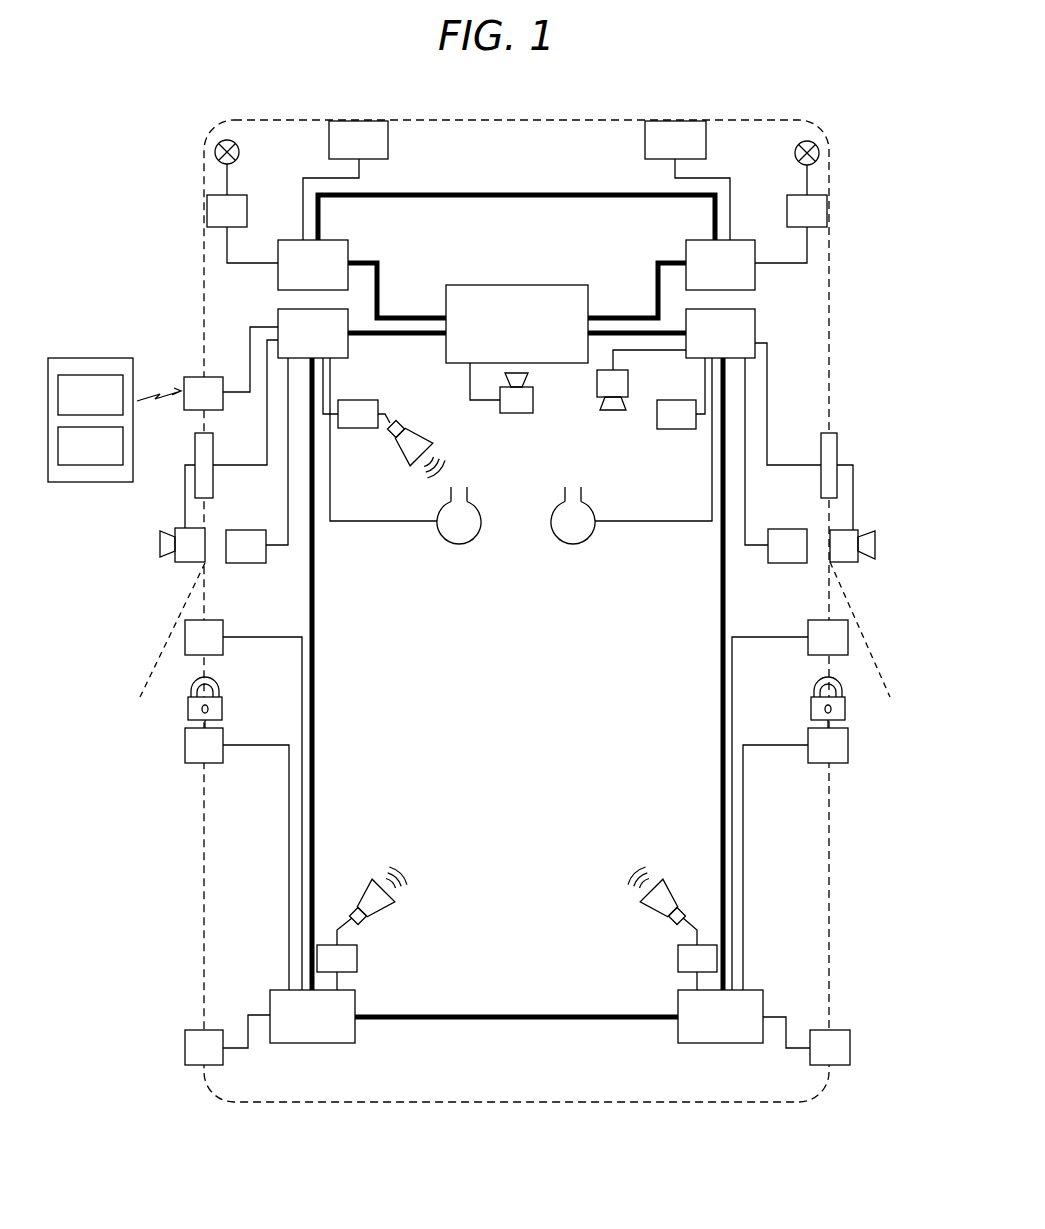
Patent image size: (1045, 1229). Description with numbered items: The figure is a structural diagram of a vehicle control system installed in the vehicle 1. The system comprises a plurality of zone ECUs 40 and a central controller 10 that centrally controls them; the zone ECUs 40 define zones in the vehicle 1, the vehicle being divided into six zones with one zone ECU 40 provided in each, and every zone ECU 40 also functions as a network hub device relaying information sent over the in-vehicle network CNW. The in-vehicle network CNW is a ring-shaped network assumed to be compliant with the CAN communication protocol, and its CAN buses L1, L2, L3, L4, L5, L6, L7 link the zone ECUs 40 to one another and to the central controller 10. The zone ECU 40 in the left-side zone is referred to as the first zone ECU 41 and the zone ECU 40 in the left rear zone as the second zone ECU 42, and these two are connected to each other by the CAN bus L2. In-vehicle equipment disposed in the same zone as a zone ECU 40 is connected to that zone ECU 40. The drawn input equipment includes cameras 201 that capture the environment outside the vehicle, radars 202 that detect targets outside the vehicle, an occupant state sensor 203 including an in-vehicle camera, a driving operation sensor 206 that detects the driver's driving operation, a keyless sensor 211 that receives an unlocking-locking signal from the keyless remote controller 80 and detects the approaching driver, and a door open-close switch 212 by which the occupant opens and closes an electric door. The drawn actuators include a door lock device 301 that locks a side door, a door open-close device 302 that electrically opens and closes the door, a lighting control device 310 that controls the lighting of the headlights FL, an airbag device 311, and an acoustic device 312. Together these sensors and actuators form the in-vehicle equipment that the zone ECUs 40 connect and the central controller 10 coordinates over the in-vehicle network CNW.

The vehicle 1 is at (247, 118).
The central controller 10 is at (510, 285).
The zone ECU 40 is at (515, 630).
The first zone ECU 41 is at (281, 326).
The second zone ECU 42 is at (353, 1034).
The keyless remote controller 80 is at (85, 358).
The camera 201 is at (516, 413).
The radar 202 is at (385, 121).
The occupant state sensor 203 is at (597, 385).
The driving operation sensor 206 is at (675, 400).
The keyless sensor 211 is at (190, 377).
The door open-close switch 212 is at (242, 530).
The door lock device 301 is at (178, 740).
The door open-close device 302 is at (223, 633).
The lighting control device 310 is at (207, 212).
The airbag device 311 is at (437, 553).
The acoustic device 312 is at (375, 448).
The headlight FL is at (215, 152).
The in-vehicle network CNW is at (517, 577).
The CAN bus L1 is at (403, 330).
The CAN bus L2 is at (316, 697).
The CAN bus L3 is at (515, 1015).
The CAN bus L4 is at (612, 330).
The CAN bus L5 is at (362, 262).
The CAN bus L6 is at (505, 195).
The CAN bus L7 is at (672, 262).